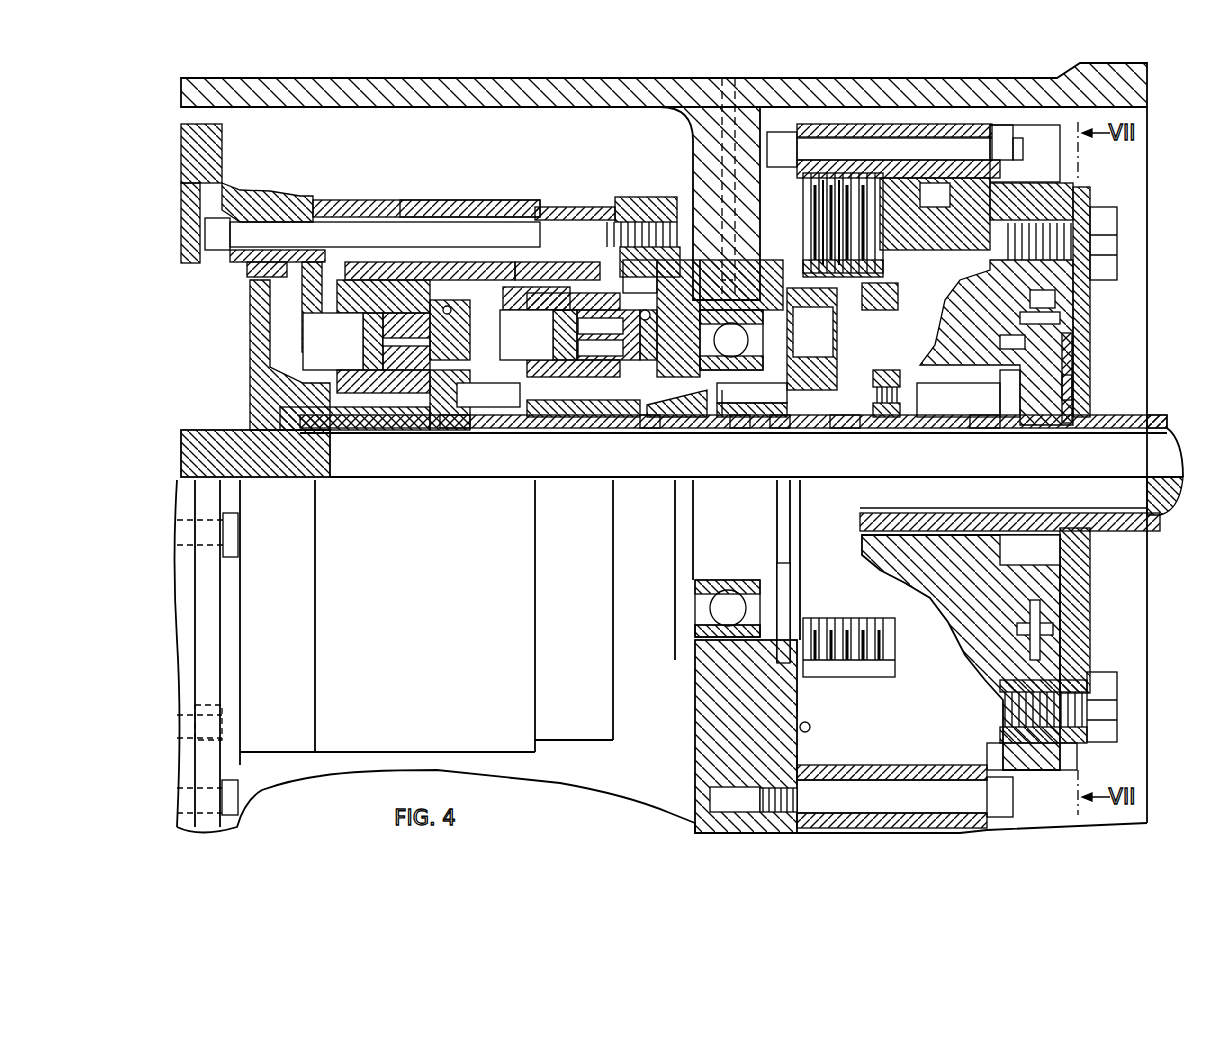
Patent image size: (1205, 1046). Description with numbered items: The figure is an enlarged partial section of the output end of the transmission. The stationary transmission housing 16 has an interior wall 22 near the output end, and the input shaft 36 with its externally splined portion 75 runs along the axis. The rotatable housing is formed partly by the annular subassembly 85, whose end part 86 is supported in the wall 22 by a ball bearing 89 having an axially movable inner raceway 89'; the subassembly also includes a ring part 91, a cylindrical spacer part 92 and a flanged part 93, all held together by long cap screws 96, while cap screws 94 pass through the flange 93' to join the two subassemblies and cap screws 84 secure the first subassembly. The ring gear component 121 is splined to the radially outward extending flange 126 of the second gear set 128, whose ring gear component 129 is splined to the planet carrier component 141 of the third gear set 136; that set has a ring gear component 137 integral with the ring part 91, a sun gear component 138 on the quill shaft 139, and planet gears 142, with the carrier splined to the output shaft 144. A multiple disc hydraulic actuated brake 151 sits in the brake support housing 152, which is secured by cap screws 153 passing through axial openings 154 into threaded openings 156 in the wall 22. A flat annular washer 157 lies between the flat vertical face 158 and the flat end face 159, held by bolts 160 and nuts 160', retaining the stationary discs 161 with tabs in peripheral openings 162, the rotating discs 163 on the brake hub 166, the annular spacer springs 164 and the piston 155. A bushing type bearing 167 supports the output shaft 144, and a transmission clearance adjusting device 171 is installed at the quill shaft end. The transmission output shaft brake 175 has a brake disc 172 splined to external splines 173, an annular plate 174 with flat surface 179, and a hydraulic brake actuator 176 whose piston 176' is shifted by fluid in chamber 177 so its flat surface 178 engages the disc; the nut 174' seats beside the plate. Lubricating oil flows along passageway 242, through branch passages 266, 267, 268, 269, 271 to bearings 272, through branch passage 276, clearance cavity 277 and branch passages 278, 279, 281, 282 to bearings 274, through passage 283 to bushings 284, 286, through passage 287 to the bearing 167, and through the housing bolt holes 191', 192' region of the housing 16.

The stationary transmission housing 16 is at (181, 98).
The interior wall 22 is at (695, 720).
The input shaft 36 is at (422, 478).
The externally splined portion 75 is at (222, 432).
The cap screws 84 is at (222, 725).
The annular subassembly 85 is at (452, 200).
The end part 86 is at (642, 200).
The ball bearing 89 is at (727, 660).
The inner raceway 89' is at (727, 588).
The ring part 91 is at (568, 210).
The cylindrical spacer part 92 is at (505, 200).
The flanged part 93 is at (267, 190).
The flange 93' is at (225, 193).
The cap screws 94 is at (240, 540).
The long cap screws 96 is at (340, 232).
The ring gear component 121 is at (245, 270).
The radially outward extending flange 126 is at (255, 355).
The second gear set 128 is at (450, 265).
The ring gear component 129 is at (377, 266).
The third gear set 136 is at (660, 300).
The ring gear component 137 is at (555, 333).
The sun gear component 138 is at (590, 432).
The quill shaft 139 is at (740, 432).
The planet carrier component 141 is at (510, 268).
The planet gears 142 is at (555, 285).
The output shaft 144 is at (540, 432).
The multiple disc hydraulic actuated brake 151 is at (883, 268).
The brake support housing 152 is at (918, 125).
The cap screws 153 is at (1000, 798).
The axial openings 154 is at (897, 785).
The piston 155 is at (925, 235).
The threaded openings 156 is at (730, 790).
The flat annular washer 157 is at (797, 705).
The flat vertical face 158 is at (800, 725).
The flat end face 159 is at (795, 760).
The bolts 160 is at (875, 132).
The nuts 160' is at (1025, 131).
The stationary discs 161 is at (870, 680).
The peripheral openings 162 is at (897, 673).
The rotating discs 163 is at (860, 259).
The annular spacer springs 164 is at (870, 290).
The brake hub 166 is at (900, 302).
The bushing type bearing 167 is at (985, 433).
The transmission clearance adjusting device 171 is at (888, 372).
The brake disc 172 is at (1080, 402).
The external splines 173 is at (1150, 418).
The annular plate 174 is at (1029, 306).
The nut 174' is at (1062, 223).
The transmission output shaft brake 175 is at (1083, 385).
The hydraulic brake actuator 176 is at (1079, 305).
The piston 176' is at (984, 348).
The chamber 177 is at (1035, 302).
The flat surface 178 is at (1075, 600).
The flat surface 179 is at (1070, 568).
The bolt hole 191' is at (687, 189).
The bolt hole 192' is at (751, 256).
The passageway 242 is at (780, 433).
The branch passage 266 is at (458, 432).
The branch passage 267 is at (525, 385).
The branch passage 268 is at (400, 395).
The branch passage 269 is at (370, 333).
The branch passage 271 is at (375, 362).
The bearings 272 is at (405, 380).
The bearings 274 is at (567, 290).
The branch passage 276 is at (700, 433).
The clearance cavity 277 is at (845, 433).
The branch passage 278 is at (652, 432).
The branch passage 279 is at (638, 360).
The branch passage 281 is at (625, 345).
The branch passage 282 is at (560, 355).
The passage 283 is at (754, 400).
The bushing 284 is at (677, 404).
The bushing 286 is at (770, 375).
The passage 287 is at (930, 433).